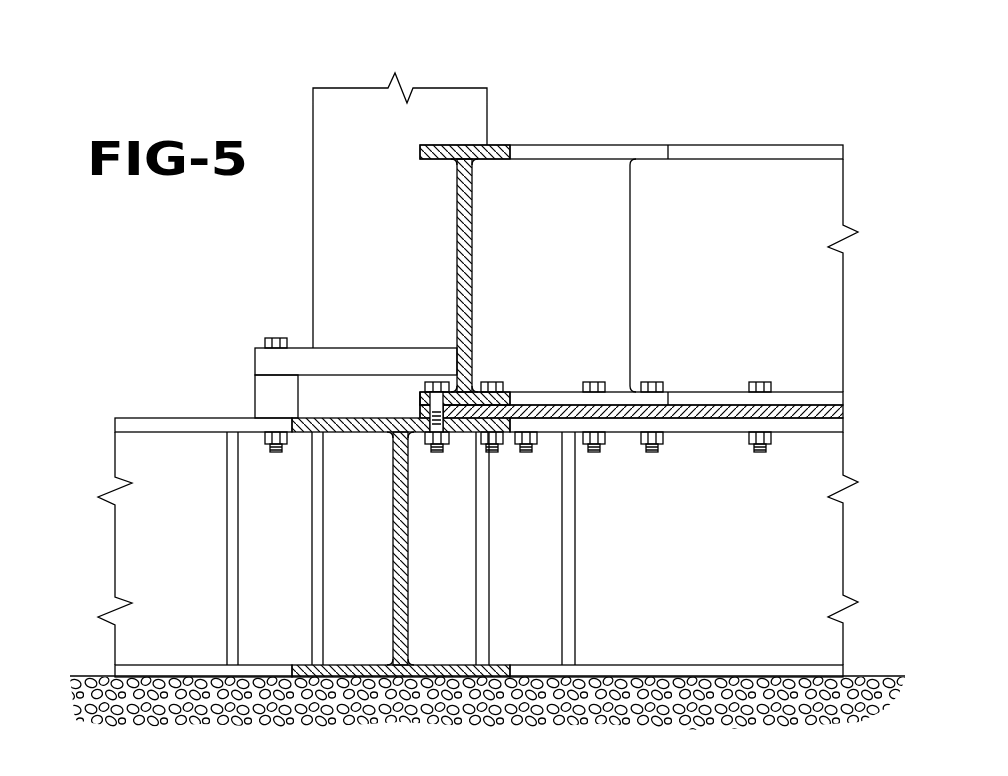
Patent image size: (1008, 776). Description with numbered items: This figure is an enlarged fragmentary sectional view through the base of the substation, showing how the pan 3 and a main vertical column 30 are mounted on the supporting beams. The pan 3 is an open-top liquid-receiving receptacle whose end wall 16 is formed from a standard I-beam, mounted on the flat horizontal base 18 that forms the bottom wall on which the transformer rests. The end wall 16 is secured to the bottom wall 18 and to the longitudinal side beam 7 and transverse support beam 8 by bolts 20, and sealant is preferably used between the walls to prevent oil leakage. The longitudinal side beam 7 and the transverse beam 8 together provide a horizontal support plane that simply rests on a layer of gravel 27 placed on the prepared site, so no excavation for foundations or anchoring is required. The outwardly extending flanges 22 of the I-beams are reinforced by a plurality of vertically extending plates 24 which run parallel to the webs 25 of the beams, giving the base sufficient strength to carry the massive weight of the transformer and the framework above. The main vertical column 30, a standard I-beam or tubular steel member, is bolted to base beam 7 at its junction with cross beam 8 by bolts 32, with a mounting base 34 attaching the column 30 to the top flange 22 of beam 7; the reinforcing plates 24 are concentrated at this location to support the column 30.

The pan 3 is at (765, 145).
The longitudinal side beam 7 is at (165, 417).
The transverse support beam 8 is at (393, 640).
The end wall 16 is at (474, 240).
The base 18 is at (712, 402).
The bolt 20 is at (437, 382).
The flange 22 is at (357, 430).
The vertically extending plate 24 is at (230, 582).
The web 25 is at (137, 546).
The layer of gravel 27 is at (858, 676).
The main vertical column 30 is at (327, 242).
The bolt 32 is at (272, 337).
The mounting base 34 is at (260, 361).